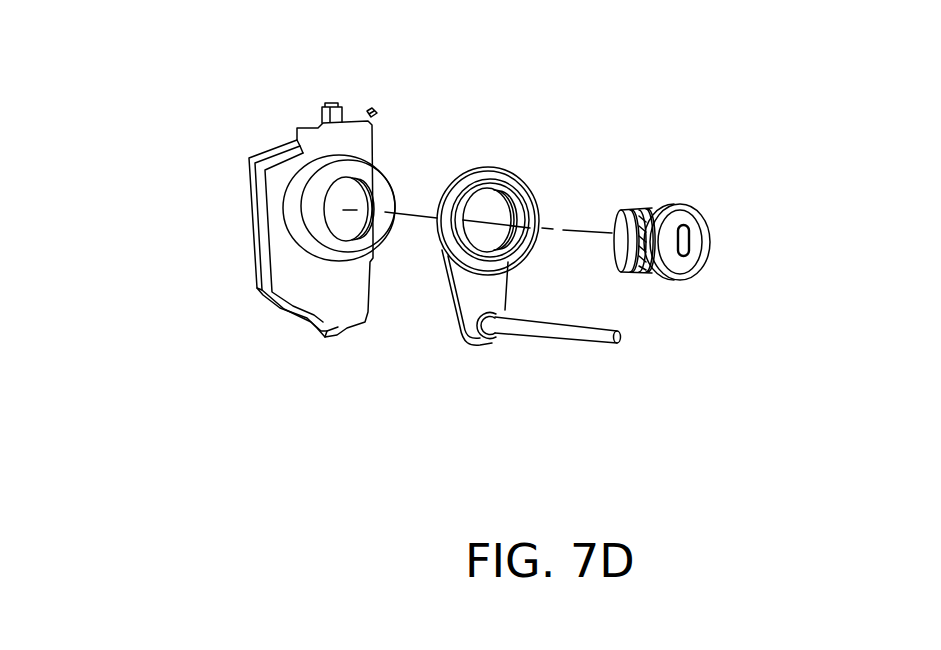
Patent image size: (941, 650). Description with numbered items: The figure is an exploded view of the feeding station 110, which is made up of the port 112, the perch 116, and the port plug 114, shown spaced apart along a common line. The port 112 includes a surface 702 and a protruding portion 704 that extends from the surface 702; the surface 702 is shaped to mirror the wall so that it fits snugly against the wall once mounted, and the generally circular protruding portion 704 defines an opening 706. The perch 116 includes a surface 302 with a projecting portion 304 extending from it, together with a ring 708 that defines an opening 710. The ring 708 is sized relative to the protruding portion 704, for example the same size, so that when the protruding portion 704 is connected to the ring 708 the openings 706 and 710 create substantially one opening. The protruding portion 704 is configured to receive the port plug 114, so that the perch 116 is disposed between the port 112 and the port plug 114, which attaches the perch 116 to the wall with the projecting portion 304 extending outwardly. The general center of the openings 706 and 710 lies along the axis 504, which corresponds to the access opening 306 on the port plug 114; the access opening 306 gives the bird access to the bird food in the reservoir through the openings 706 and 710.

The feeding station 110 is at (133, 90).
The port 112 is at (350, 97).
The surface 702 is at (310, 325).
The protruding portion 704 is at (293, 203).
The opening 706 is at (342, 203).
The ring 708 is at (489, 167).
The opening 710 is at (488, 220).
The surface 302 is at (453, 303).
The projecting portion 304 is at (574, 318).
The perch 116 is at (563, 373).
The axis 504 is at (597, 230).
The port plug 114 is at (732, 205).
The access opening 306 is at (686, 242).